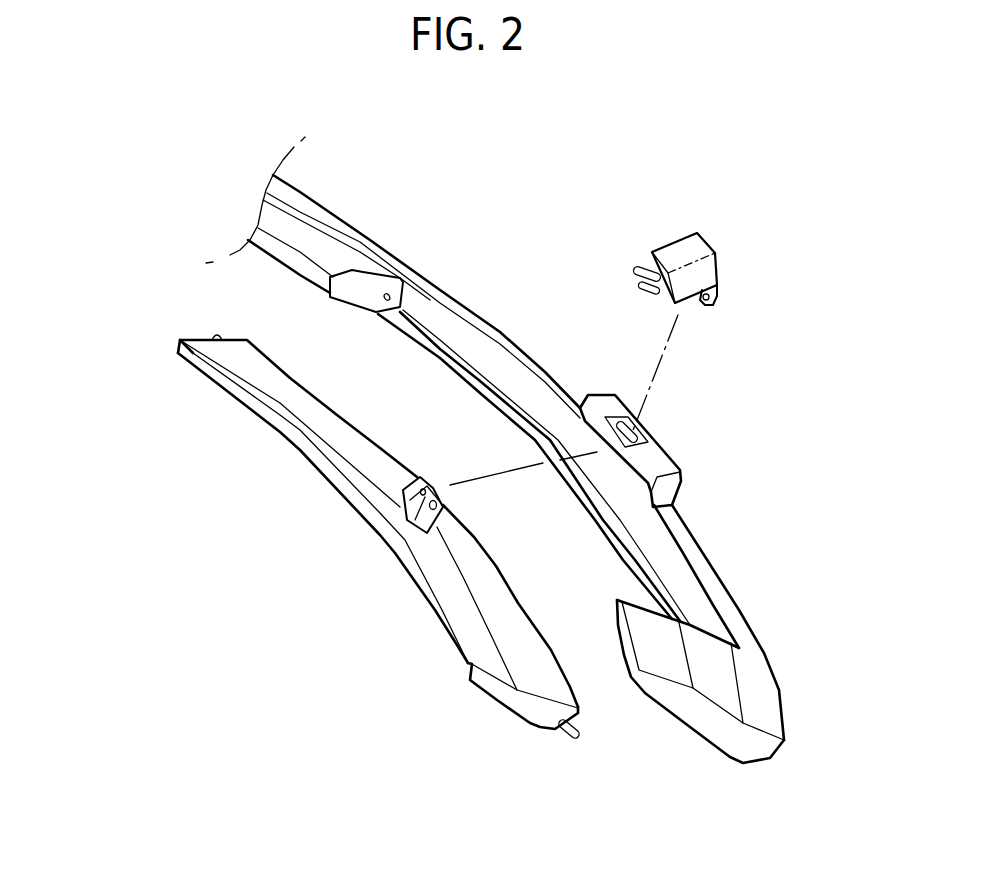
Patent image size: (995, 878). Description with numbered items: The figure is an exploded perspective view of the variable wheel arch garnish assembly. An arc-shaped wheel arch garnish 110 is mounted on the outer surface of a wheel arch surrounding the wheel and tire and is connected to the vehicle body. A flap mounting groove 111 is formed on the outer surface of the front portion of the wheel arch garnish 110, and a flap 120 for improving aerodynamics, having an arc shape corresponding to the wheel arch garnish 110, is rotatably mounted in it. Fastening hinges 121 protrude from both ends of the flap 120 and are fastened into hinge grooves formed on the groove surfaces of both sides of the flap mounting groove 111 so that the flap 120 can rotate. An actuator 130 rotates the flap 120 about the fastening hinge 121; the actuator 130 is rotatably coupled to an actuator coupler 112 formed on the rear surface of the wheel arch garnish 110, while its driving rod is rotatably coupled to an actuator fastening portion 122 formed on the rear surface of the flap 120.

The wheel arch garnish 110 is at (371, 247).
The flap mounting groove 111 is at (468, 356).
The actuator coupler 112 is at (665, 458).
The flap 120 is at (336, 495).
The fastening hinge 121 is at (216, 337).
The actuator fastening portion 122 is at (433, 515).
The actuator 130 is at (698, 243).